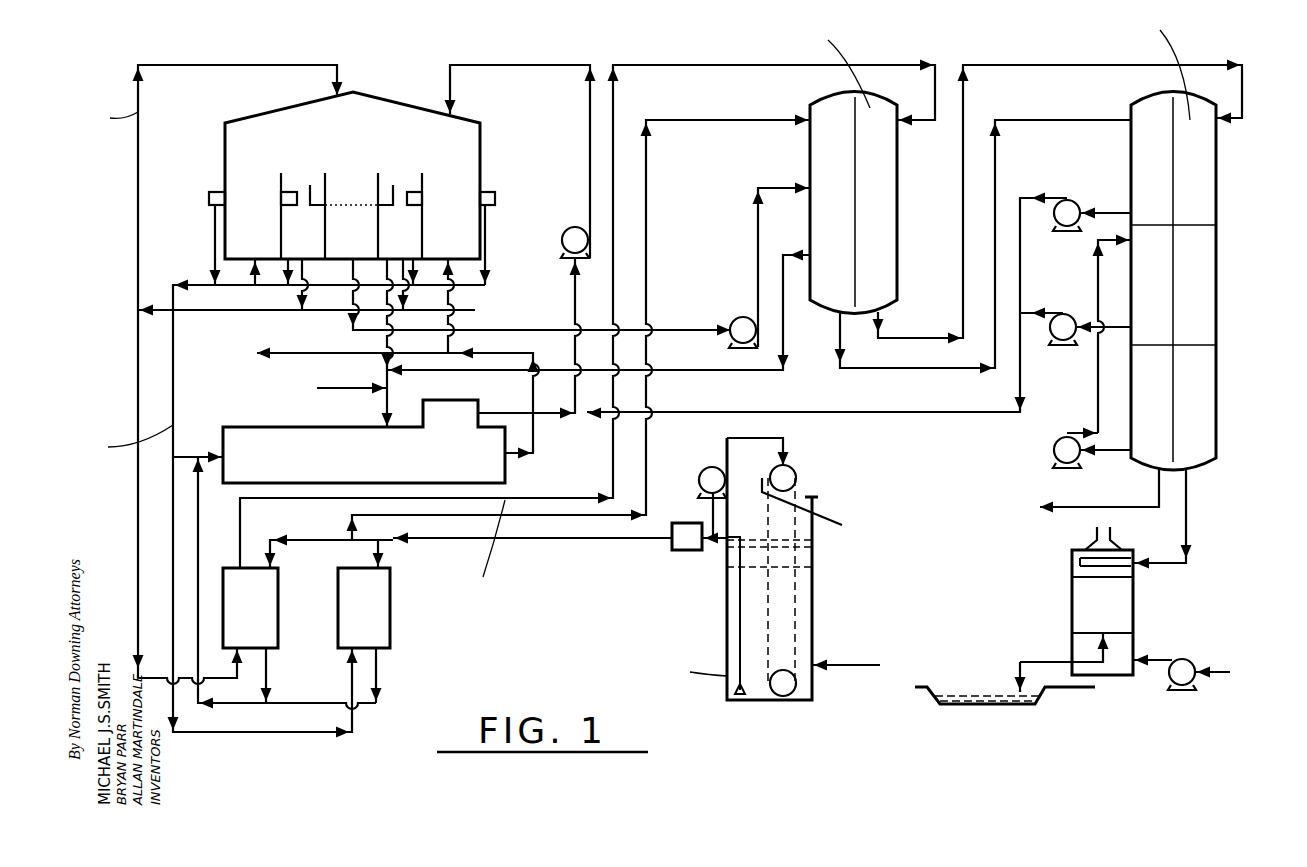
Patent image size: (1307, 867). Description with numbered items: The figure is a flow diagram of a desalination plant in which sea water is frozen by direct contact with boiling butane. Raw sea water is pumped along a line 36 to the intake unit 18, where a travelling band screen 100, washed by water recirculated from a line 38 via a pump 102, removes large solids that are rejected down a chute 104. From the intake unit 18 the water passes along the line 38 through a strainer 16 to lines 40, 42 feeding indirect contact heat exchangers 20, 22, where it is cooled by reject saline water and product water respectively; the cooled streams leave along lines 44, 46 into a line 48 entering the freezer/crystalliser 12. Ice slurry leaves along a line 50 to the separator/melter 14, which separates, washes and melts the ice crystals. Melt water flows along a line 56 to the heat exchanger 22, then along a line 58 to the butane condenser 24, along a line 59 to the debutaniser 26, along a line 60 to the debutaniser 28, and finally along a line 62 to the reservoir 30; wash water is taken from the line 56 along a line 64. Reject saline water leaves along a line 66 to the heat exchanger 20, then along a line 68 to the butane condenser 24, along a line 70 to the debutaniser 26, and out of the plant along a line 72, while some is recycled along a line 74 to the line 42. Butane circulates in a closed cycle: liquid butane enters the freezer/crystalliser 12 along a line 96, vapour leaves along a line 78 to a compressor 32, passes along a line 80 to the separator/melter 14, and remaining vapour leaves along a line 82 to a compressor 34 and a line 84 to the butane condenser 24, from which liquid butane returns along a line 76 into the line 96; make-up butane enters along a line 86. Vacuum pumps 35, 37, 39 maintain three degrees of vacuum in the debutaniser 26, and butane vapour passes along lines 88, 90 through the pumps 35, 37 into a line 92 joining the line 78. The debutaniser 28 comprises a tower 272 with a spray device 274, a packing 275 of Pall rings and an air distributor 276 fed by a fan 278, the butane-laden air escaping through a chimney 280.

The freezer/crystalliser 12 is at (268, 432).
The separator/melter 14 is at (482, 160).
The strainer 16 is at (672, 552).
The sea water intake unit 18 is at (725, 645).
The indirect contact heat exchanger 20 is at (392, 625).
The indirect contact heat exchanger 22 is at (280, 625).
The butane condenser 24 is at (897, 175).
The debutaniser 26 is at (1216, 345).
The debutaniser 28 is at (1072, 627).
The reservoir 30 is at (930, 705).
The compressor 32 is at (560, 240).
The compressor 34 is at (732, 320).
The vacuum pump 35 is at (1067, 203).
The line 36 is at (862, 665).
The vacuum pump 37 is at (1057, 315).
The line 38 is at (635, 540).
The vacuum pump 39 is at (1057, 448).
The line 40 is at (382, 545).
The line 42 is at (275, 548).
The line 44 is at (268, 668).
The line 46 is at (378, 668).
The line 48 is at (198, 490).
The line 50 is at (335, 355).
The line 56 is at (240, 310).
The line 58 is at (650, 67).
The line 59 is at (1005, 67).
The line 60 is at (1187, 522).
The line 62 is at (1010, 688).
The line 64 is at (142, 173).
The line 66 is at (200, 285).
The line 68 is at (700, 120).
The line 70 is at (1030, 120).
The line 72 is at (1158, 492).
The line 74 is at (173, 457).
The line 76 is at (455, 372).
The line 78 is at (577, 298).
The line 80 is at (590, 153).
The line 82 is at (352, 277).
The line 84 is at (758, 232).
The line 86 is at (358, 390).
The line 88 is at (1110, 213).
The line 90 is at (1080, 337).
The line 92 is at (955, 413).
The line 96 is at (392, 318).
The travelling band screen 100 is at (805, 580).
The pump 102 is at (708, 465).
The chute 104 is at (822, 522).
The tower 272 is at (1135, 595).
The spray device 274 is at (1082, 562).
The packing 275 is at (1085, 595).
The air distributor 276 is at (1100, 660).
The fan 278 is at (1185, 658).
The chimney 280 is at (1097, 535).